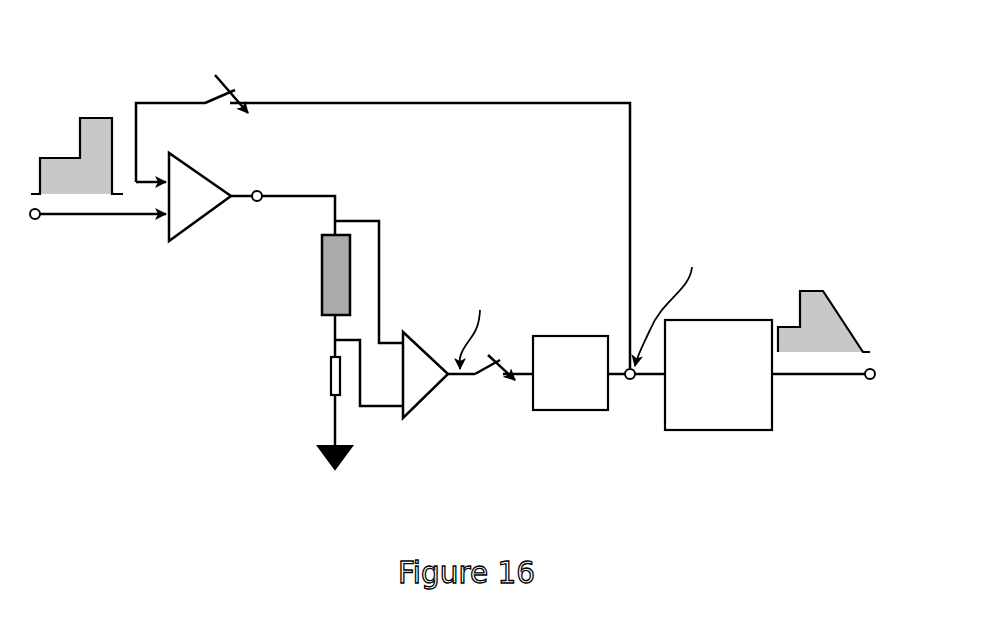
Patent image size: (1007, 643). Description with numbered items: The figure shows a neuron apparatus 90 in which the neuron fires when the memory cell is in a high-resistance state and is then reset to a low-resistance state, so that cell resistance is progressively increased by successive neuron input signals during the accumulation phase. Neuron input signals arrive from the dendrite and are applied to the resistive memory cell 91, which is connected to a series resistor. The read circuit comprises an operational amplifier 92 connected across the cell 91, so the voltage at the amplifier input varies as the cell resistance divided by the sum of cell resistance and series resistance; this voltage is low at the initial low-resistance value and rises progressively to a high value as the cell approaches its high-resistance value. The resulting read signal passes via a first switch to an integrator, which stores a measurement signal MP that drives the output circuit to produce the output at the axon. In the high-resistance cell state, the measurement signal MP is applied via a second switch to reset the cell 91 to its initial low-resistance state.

The neuron apparatus 90 is at (452, 253).
The resistive memory cell 91 is at (322, 300).
The operational amplifier 92 is at (418, 407).